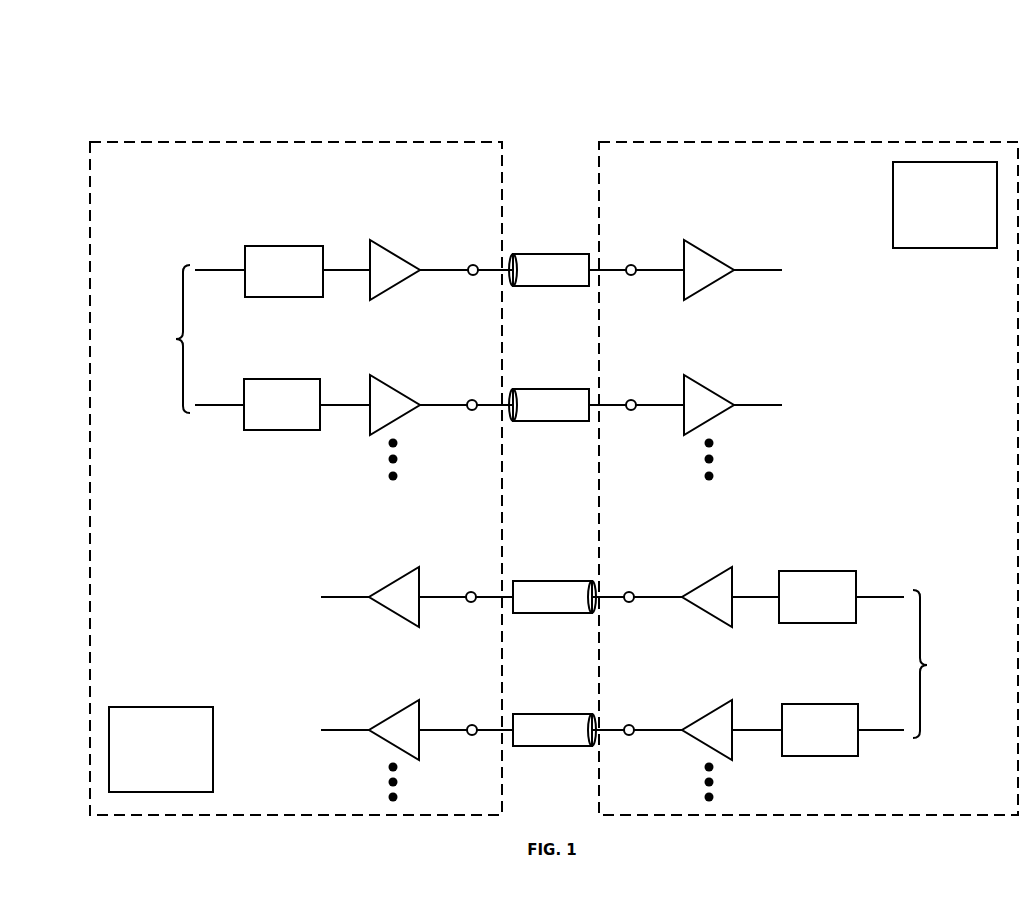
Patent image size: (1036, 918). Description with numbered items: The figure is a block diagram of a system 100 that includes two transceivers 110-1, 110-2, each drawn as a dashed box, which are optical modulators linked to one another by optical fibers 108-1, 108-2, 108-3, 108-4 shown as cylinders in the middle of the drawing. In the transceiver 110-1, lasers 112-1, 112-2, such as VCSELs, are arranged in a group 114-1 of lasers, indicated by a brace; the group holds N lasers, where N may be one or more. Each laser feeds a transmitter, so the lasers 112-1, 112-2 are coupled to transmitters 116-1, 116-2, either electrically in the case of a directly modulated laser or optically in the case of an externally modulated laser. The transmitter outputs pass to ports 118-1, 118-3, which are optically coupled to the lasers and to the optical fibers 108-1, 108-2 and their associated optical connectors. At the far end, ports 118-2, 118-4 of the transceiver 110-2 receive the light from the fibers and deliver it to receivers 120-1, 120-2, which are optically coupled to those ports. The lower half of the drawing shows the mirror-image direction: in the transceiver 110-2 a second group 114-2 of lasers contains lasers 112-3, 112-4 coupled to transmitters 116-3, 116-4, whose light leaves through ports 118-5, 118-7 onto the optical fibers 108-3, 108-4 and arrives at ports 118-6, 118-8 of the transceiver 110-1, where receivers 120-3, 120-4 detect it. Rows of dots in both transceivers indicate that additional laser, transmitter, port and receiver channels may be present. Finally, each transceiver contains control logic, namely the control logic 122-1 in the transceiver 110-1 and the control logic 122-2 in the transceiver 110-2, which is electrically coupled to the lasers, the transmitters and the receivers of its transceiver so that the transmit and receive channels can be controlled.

The system 100 is at (177, 105).
The transceiver 110-1 is at (296, 478).
The transceiver 110-2 is at (808, 478).
The laser 112-1 is at (284, 271).
The laser 112-2 is at (282, 404).
The laser 112-3 is at (817, 597).
The laser 112-4 is at (820, 730).
The group of lasers 114-1 is at (147, 339).
The group of lasers 114-2 is at (955, 664).
The transmitter 116-1 is at (393, 263).
The transmitter 116-2 is at (393, 398).
The transmitter 116-3 is at (707, 588).
The transmitter 116-4 is at (707, 721).
The port 118-1 is at (470, 264).
The port 118-2 is at (633, 264).
The port 118-3 is at (470, 399).
The port 118-4 is at (633, 399).
The port 118-5 is at (632, 591).
The port 118-6 is at (469, 591).
The port 118-7 is at (632, 724).
The port 118-8 is at (470, 724).
The receiver 120-1 is at (703, 248).
The receiver 120-2 is at (703, 383).
The receiver 120-3 is at (400, 572).
The receiver 120-4 is at (400, 705).
The optical fiber 108-1 is at (528, 270).
The optical fiber 108-2 is at (528, 403).
The optical fiber 108-3 is at (572, 595).
The optical fiber 108-4 is at (575, 728).
The control logic 122-1 is at (161, 749).
The control logic 122-2 is at (945, 205).